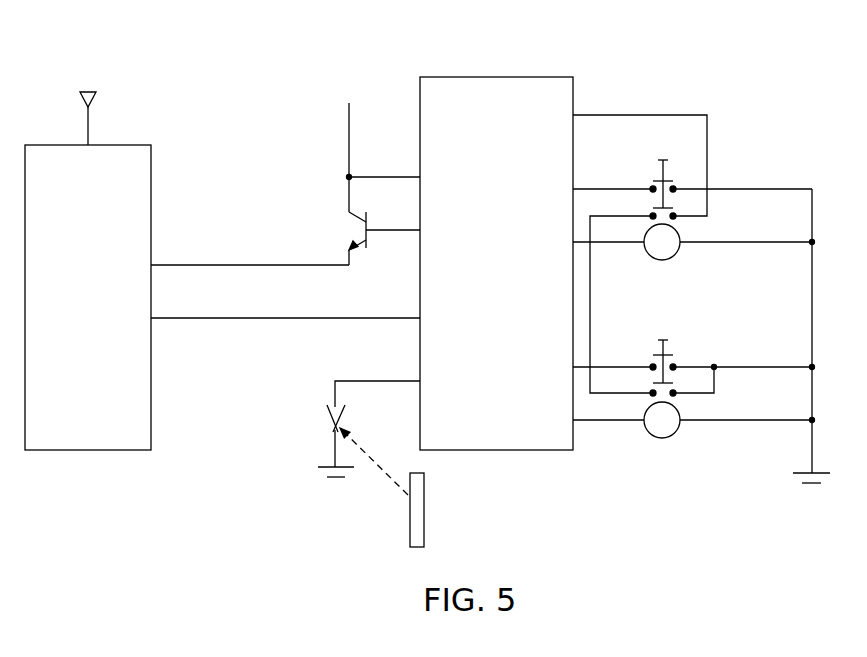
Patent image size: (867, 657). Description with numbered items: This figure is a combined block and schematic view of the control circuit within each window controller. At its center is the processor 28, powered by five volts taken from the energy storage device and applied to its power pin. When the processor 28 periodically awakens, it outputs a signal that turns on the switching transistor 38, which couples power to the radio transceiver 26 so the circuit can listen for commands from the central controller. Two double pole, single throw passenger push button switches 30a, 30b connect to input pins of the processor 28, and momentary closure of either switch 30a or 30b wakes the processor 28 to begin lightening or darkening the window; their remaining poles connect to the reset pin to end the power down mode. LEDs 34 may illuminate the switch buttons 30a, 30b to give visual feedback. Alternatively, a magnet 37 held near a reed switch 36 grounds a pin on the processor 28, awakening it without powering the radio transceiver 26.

The radio 26 is at (124, 157).
The processor 28 is at (500, 98).
The switch A 30a is at (685, 183).
The switch B 30b is at (677, 380).
The lamp 34 is at (677, 254).
The reed switch 36 is at (318, 445).
The magnet 37 is at (410, 520).
The transistor 38 is at (320, 192).